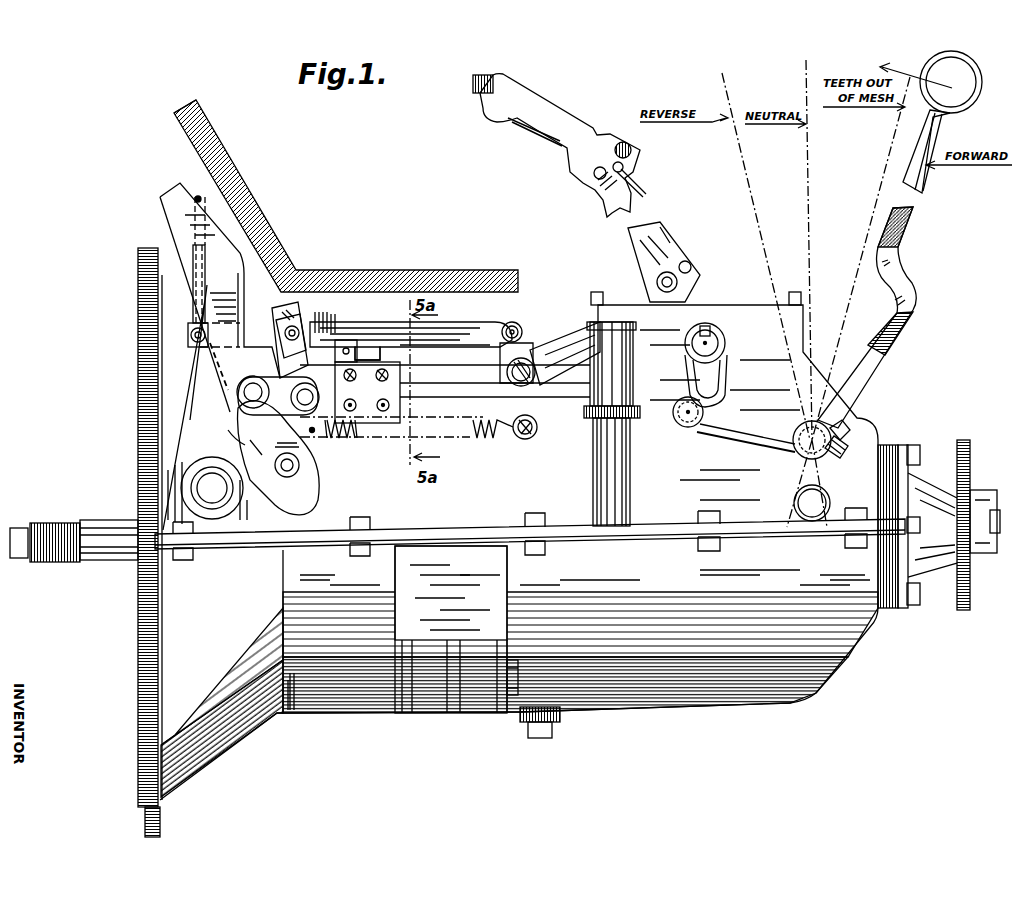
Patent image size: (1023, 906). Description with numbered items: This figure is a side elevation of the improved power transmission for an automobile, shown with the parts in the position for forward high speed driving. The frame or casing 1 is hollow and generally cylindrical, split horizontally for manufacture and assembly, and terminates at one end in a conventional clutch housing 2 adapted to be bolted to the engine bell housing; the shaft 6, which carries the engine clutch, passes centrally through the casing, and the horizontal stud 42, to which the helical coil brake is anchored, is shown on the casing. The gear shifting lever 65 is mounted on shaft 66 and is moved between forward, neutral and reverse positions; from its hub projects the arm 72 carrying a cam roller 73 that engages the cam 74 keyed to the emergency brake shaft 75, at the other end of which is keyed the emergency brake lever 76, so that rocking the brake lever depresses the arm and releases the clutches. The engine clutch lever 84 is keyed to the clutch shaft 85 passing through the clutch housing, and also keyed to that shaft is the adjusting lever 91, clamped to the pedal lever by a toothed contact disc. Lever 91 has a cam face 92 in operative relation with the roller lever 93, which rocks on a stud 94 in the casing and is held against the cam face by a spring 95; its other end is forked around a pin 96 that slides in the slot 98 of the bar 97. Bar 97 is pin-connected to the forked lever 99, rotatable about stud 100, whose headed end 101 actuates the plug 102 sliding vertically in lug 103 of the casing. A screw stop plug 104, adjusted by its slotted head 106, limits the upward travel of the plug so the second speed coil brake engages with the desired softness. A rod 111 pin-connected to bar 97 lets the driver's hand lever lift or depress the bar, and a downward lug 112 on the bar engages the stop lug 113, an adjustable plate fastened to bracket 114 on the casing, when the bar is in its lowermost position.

The casing 1 is at (692, 718).
The clutch housing 2 is at (227, 723).
The shaft 6 is at (120, 560).
The horizontal stud 42 is at (513, 662).
The gear shifting lever 65 is at (893, 346).
The shaft 66 is at (800, 447).
The arm 72 is at (728, 430).
The cam roller 73 is at (682, 419).
The cam 74 is at (693, 383).
The emergency brake shaft 75 is at (716, 338).
The emergency brake lever 76 is at (643, 260).
The engine clutch lever 84 is at (172, 202).
The clutch shaft 85 is at (205, 483).
The adjusting lever 91 is at (262, 487).
The cam face 92 is at (263, 430).
The roller lever 93 is at (275, 378).
The stud 94 is at (313, 433).
The spring 95 is at (348, 438).
The pin 96 is at (296, 331).
The bar 97 is at (490, 330).
The slot 98 is at (280, 303).
The forked lever 99 is at (521, 337).
The stud 100 is at (517, 384).
The headed end 101 is at (606, 330).
The plug 102 is at (620, 365).
The lug 103 is at (595, 486).
The screw stop plug 104 is at (600, 420).
The slotted head 106 is at (537, 424).
The rod 111 is at (195, 262).
The lug 112 is at (371, 332).
The stop lug 113 is at (343, 342).
The bracket 114 is at (372, 413).